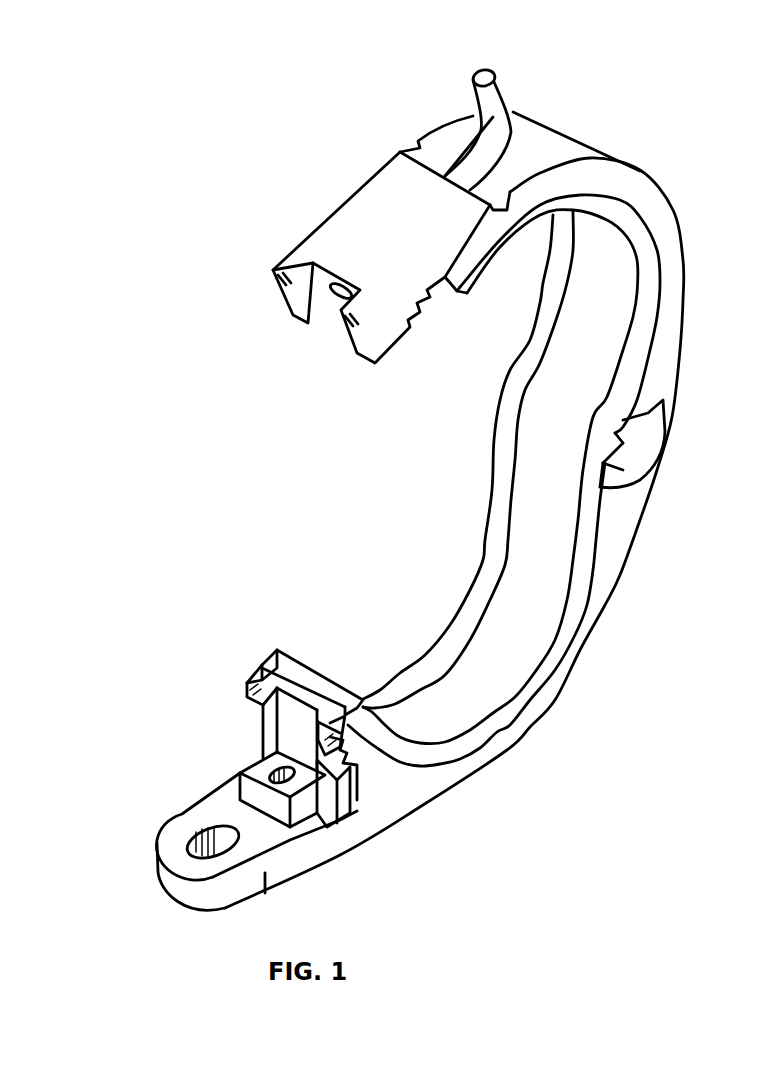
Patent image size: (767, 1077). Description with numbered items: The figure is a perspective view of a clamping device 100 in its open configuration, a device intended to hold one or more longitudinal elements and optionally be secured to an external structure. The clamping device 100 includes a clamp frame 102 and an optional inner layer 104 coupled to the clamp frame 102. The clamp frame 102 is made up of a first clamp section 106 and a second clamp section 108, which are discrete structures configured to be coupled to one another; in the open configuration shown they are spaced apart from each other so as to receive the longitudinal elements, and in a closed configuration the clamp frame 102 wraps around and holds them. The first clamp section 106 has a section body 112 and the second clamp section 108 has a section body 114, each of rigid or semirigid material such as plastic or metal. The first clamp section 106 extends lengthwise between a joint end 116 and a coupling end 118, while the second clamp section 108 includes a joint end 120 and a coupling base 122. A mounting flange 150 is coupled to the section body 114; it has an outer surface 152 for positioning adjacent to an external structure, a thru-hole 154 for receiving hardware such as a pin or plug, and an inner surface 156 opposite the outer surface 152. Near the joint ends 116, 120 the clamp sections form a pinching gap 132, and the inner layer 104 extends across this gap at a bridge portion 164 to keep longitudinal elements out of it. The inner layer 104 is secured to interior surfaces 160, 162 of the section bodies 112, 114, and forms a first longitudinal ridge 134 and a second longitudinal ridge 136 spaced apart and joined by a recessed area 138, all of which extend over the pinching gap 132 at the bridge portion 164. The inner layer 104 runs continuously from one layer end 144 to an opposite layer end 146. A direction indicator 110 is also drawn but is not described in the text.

The clamping device 100 is at (718, 88).
The clamp frame 102 is at (689, 336).
The inner layer 104 is at (530, 677).
The first clamp section 106 is at (567, 150).
The second clamp section 108 is at (562, 685).
The axis 110 is at (733, 551).
The section body 112 is at (537, 140).
The section body 114 is at (312, 843).
The joint end 116 is at (642, 453).
The coupling end 118 is at (257, 312).
The joint end 120 is at (613, 493).
The coupling base 122 is at (245, 688).
The pinching gap 132 is at (615, 442).
The first longitudinal ridge 134 is at (493, 717).
The second longitudinal ridge 136 is at (413, 667).
The recessed area 138 is at (527, 573).
The layer end 144 is at (352, 690).
The layer end 146 is at (456, 309).
The mounting flange 150 is at (165, 797).
The outer surface 152 is at (322, 882).
The thru-hole 154 is at (220, 830).
The inner surface 156 is at (233, 806).
The interior surface 160 is at (620, 197).
The interior surface 162 is at (497, 737).
The bridge portion 164 is at (550, 436).